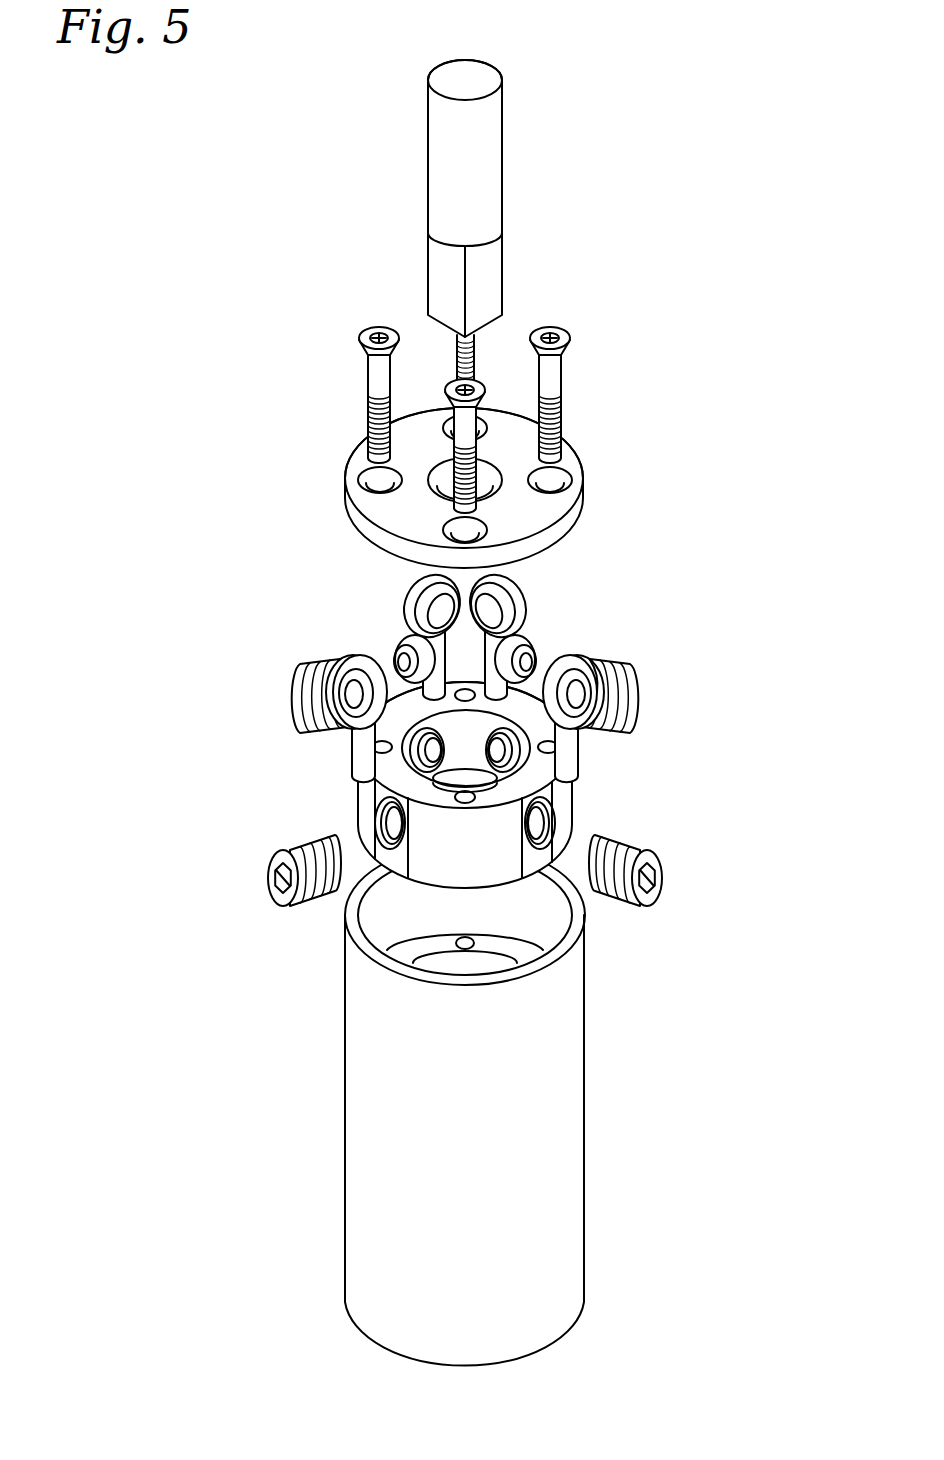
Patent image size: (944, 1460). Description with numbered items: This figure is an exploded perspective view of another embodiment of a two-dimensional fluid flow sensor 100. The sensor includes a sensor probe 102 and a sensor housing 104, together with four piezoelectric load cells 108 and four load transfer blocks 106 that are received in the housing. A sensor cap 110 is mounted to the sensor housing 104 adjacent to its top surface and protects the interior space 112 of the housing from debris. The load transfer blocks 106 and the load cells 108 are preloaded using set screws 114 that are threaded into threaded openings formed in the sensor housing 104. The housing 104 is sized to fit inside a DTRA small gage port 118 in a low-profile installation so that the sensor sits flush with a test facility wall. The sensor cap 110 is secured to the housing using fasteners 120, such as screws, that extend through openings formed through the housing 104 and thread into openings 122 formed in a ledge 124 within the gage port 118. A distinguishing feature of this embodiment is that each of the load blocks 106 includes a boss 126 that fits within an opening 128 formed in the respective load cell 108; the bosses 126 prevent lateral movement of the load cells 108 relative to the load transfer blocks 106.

The fluid flow sensor 100 is at (280, 465).
The sensor probe 102 is at (503, 172).
The sensor housing 104 is at (520, 778).
The load transfer block 106 is at (532, 657).
The piezoelectric load cell 108 is at (595, 667).
The sensor cap 110 is at (578, 455).
The interior space 112 is at (452, 763).
The set screw 114 is at (663, 885).
The DTRA small gage port 118 is at (585, 1117).
The fastener 120 is at (562, 328).
The opening 122 is at (457, 937).
The ledge 124 is at (518, 952).
The boss 126 is at (395, 662).
The opening 128 is at (353, 692).